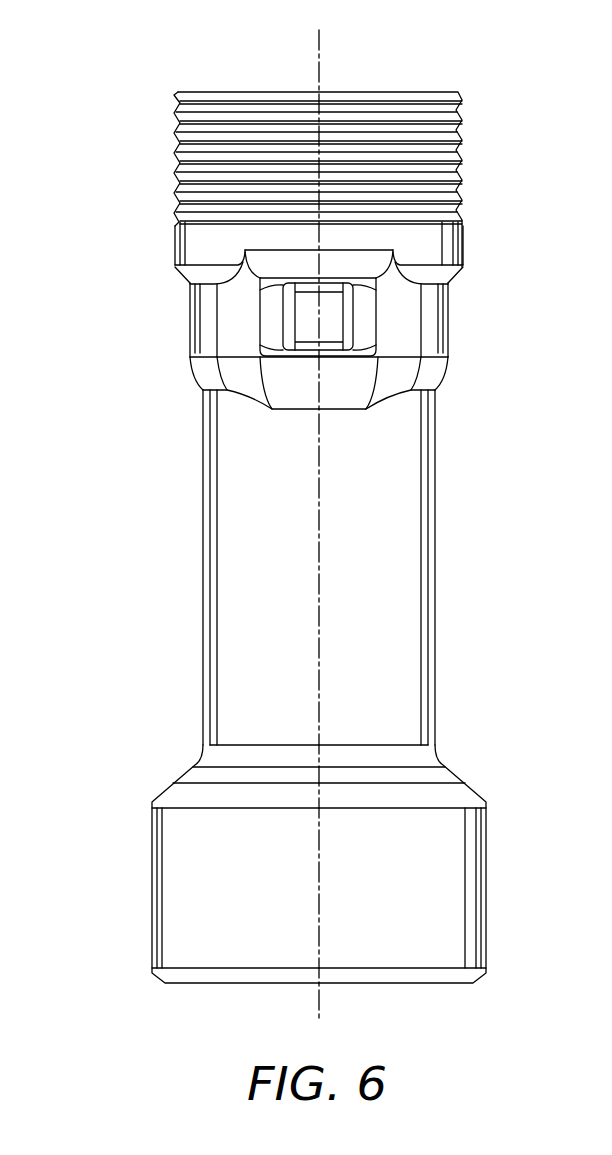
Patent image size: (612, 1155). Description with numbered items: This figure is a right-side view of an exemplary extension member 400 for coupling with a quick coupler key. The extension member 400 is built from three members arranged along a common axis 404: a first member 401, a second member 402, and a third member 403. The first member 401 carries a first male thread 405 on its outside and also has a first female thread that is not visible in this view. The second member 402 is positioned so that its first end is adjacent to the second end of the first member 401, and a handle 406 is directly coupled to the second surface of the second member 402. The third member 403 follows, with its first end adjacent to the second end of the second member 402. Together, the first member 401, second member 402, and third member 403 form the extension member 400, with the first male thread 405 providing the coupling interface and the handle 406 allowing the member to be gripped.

The extension member 400 is at (123, 66).
The first member 401 is at (148, 176).
The second member 402 is at (173, 584).
The third member 403 is at (119, 892).
The axis 404 is at (321, 42).
The first male thread 405 is at (460, 143).
The handle 406 is at (330, 318).